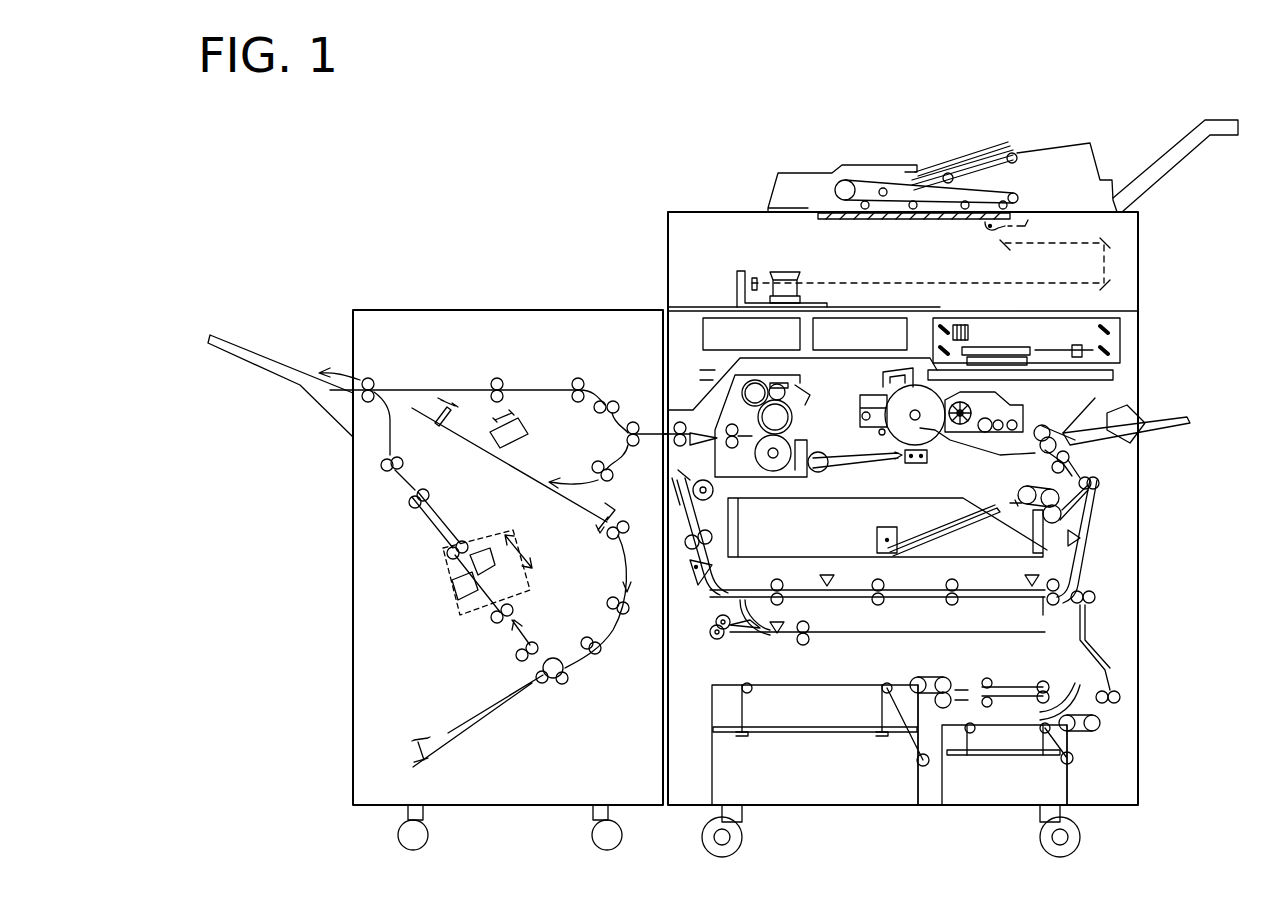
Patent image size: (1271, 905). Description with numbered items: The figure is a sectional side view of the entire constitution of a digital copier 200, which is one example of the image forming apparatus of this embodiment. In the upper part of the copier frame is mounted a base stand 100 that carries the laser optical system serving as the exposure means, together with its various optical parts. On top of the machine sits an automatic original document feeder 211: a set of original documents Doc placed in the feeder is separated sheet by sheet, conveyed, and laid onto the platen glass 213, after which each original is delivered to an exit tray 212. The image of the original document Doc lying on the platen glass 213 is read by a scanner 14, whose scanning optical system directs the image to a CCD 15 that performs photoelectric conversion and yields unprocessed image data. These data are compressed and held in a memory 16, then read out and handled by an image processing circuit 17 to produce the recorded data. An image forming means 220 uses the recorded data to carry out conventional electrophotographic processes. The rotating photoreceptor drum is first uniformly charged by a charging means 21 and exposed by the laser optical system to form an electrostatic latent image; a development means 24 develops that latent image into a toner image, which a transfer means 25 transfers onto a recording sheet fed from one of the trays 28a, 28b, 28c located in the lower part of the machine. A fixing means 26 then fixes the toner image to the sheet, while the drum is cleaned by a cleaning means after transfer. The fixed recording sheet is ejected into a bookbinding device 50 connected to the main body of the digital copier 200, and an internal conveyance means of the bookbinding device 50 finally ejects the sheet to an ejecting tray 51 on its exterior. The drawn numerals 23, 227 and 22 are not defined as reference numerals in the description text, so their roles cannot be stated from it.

The scanner 14 is at (686, 220).
The digital copier 200 is at (722, 206).
The automatic original document feeder 211 is at (934, 160).
The original document Doc is at (980, 152).
The exit tray 212 is at (1140, 160).
The platen glass 213 is at (928, 224).
The bookbinding device 50 is at (466, 300).
The ejecting tray 51 is at (250, 372).
The CCD 15 is at (762, 270).
The memory 16 is at (692, 318).
The image processing circuit 17 is at (843, 318).
The scanner / image reading unit 23 is at (935, 326).
The image forming means 220 is at (795, 368).
The charging means 21 is at (882, 388).
The developing unit 227 is at (860, 412).
The fixing means 26 is at (776, 417).
The cleaning unit 22 is at (1005, 384).
The development means 24 is at (1025, 417).
The transfer means 25 is at (916, 465).
The base stand 100 is at (1115, 375).
The tray 28a is at (750, 512).
The tray 28b is at (823, 735).
The tray 28c is at (1002, 740).